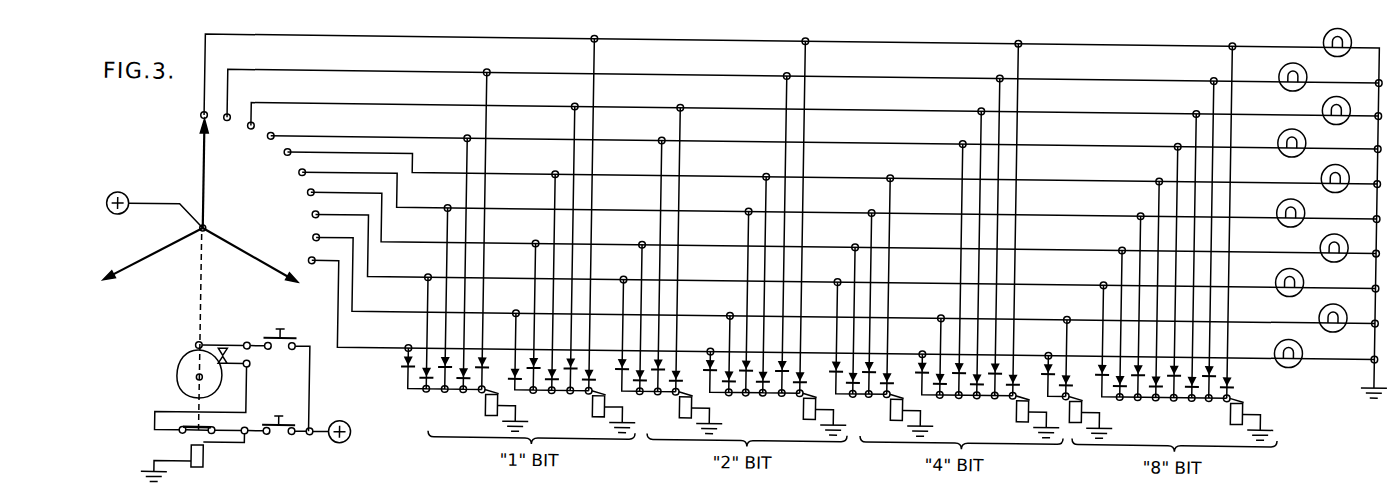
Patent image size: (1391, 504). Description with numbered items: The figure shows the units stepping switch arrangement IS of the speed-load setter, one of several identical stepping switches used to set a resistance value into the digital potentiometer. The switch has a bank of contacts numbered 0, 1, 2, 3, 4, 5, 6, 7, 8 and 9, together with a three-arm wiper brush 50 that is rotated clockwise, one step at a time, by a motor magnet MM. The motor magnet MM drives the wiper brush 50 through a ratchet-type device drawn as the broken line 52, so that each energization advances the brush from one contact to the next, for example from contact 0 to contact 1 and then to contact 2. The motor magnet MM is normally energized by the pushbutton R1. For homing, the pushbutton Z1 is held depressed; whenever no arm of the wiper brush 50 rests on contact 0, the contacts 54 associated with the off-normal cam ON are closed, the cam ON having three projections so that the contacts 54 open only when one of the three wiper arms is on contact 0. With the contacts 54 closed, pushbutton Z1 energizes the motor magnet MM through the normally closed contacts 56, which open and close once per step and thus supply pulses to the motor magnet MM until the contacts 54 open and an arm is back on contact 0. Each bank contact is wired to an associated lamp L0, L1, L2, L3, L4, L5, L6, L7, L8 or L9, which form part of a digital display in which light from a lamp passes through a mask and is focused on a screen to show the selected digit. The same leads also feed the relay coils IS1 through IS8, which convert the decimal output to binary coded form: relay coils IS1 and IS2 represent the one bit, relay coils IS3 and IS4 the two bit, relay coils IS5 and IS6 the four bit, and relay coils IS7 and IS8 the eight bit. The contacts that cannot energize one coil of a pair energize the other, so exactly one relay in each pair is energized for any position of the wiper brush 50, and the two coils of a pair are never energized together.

The contact 0 is at (198, 119).
The contact 1 is at (229, 128).
The contact 2 is at (247, 133).
The contact 3 is at (267, 143).
The contact 4 is at (281, 157).
The contact 5 is at (296, 174).
The contact 6 is at (305, 193).
The contact 7 is at (311, 216).
The contact 8 is at (308, 238).
The contact 9 is at (304, 260).
The units stepping switch arrangement IS is at (172, 194).
The three-arm wiper brush 50 is at (246, 257).
The ratchet-type device 52 is at (200, 309).
The contacts 54 is at (240, 348).
The normally closed contacts 56 is at (196, 435).
The off-normal cam ON is at (181, 373).
The pushbutton Z1 is at (283, 333).
The pushbutton R1 is at (281, 420).
The motor magnet MM is at (206, 462).
The relay coil IS1 is at (488, 401).
The relay coil IS2 is at (595, 401).
The relay coil IS3 is at (682, 401).
The relay coil IS4 is at (806, 401).
The relay coil IS5 is at (893, 401).
The relay coil IS6 is at (1019, 401).
The relay coil IS7 is at (1090, 397).
The relay coil IS8 is at (1233, 401).
The lamp L0 is at (1321, 30).
The lamp L1 is at (1304, 68).
The lamp L2 is at (1320, 100).
The lamp L3 is at (1304, 134).
The lamp L4 is at (1320, 169).
The lamp L5 is at (1304, 203).
The lamp L6 is at (1320, 238).
The lamp L7 is at (1304, 274).
The lamp L8 is at (1320, 308).
The lamp L9 is at (1304, 344).